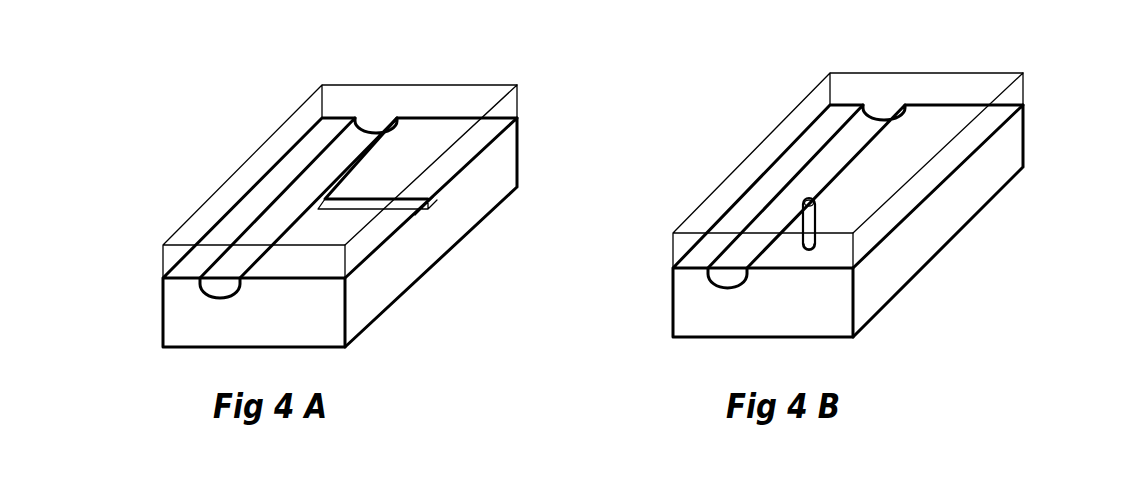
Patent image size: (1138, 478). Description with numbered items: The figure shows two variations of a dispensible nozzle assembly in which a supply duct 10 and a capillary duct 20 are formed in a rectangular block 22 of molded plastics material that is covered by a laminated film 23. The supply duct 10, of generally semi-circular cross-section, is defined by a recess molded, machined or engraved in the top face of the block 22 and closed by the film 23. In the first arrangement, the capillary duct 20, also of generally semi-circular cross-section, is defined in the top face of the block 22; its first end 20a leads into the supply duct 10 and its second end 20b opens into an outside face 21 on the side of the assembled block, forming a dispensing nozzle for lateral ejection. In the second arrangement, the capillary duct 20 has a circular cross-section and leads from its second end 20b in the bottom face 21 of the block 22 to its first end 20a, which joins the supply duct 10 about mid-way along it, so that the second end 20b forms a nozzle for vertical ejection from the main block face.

In FIG. 4A, the supply duct 10 is at (338, 132).
In FIG. 4B, the supply duct 10 is at (852, 120).
In FIG. 4A, the capillary duct 20 is at (429, 218).
In FIG. 4B, the capillary duct 20 is at (951, 255).
In FIG. 4A, the first end 20a is at (327, 198).
In FIG. 4B, the first end 20a is at (816, 200).
In FIG. 4A, the second end 20b is at (418, 213).
In FIG. 4B, the second end 20b is at (810, 249).
In FIG. 4A, the outside face 21 is at (500, 153).
In FIG. 4B, the outside face 21 is at (1010, 143).
In FIG. 4A, the rectangular block 22 is at (163, 304).
In FIG. 4B, the rectangular block 22 is at (672, 294).
In FIG. 4A, the laminated film 23 is at (250, 157).
In FIG. 4B, the laminated film 23 is at (760, 147).